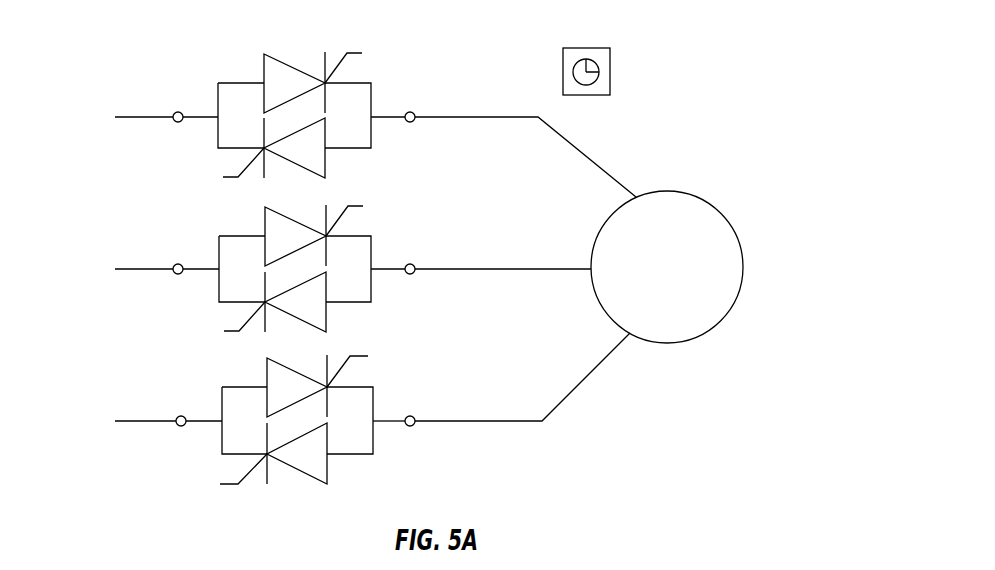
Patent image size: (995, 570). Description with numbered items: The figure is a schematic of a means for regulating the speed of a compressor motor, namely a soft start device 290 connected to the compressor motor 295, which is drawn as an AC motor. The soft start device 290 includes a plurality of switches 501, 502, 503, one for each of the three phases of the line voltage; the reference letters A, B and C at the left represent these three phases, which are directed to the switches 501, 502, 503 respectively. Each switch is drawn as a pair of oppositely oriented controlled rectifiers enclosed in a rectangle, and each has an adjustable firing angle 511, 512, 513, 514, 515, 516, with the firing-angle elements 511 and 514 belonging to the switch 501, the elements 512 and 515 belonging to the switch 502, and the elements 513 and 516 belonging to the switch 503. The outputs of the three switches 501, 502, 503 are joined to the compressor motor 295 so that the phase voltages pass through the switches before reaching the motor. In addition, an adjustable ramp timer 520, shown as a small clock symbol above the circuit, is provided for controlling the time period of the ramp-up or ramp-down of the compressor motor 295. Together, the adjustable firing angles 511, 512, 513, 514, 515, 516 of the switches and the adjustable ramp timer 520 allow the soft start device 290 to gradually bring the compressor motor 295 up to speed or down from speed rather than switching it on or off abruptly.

The soft start device 290 is at (746, 108).
The compressor motor 295 is at (693, 327).
The switch 501 is at (401, 117).
The switch 502 is at (379, 272).
The switch 503 is at (399, 420).
The adjustable firing angle 511 is at (223, 177).
The adjustable firing angle 512 is at (224, 331).
The adjustable firing angle 513 is at (220, 484).
The adjustable firing angle 514 is at (362, 53).
The adjustable firing angle 515 is at (363, 206).
The adjustable firing angle 516 is at (368, 356).
The adjustable ramp timer 520 is at (602, 48).